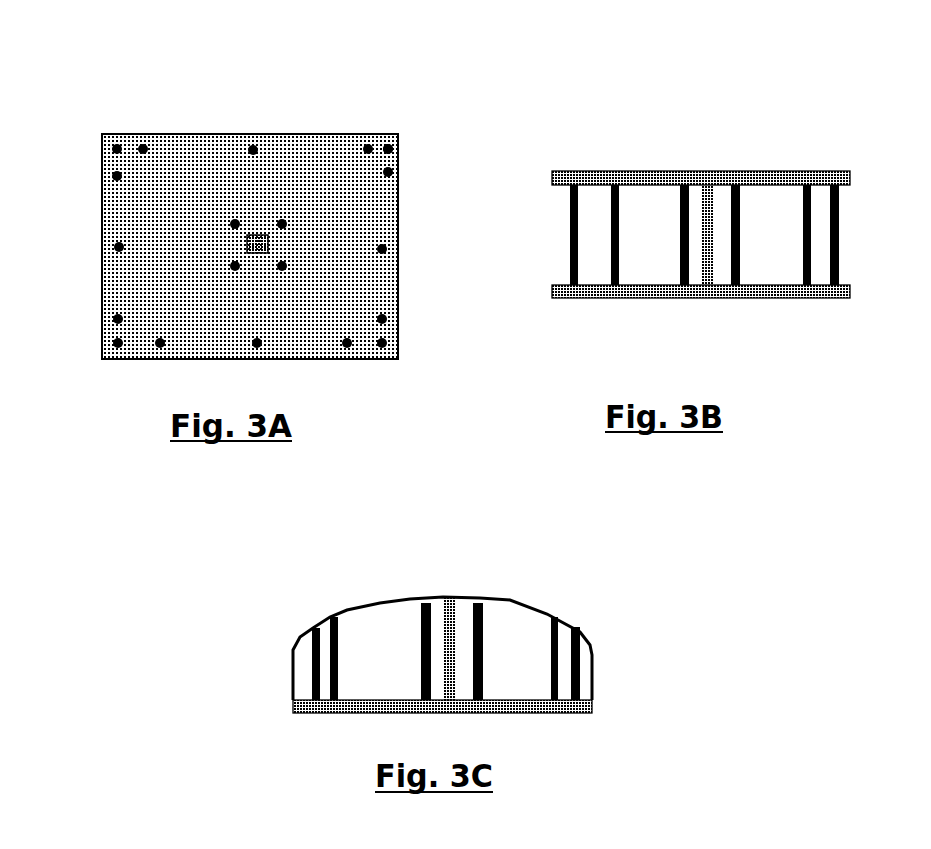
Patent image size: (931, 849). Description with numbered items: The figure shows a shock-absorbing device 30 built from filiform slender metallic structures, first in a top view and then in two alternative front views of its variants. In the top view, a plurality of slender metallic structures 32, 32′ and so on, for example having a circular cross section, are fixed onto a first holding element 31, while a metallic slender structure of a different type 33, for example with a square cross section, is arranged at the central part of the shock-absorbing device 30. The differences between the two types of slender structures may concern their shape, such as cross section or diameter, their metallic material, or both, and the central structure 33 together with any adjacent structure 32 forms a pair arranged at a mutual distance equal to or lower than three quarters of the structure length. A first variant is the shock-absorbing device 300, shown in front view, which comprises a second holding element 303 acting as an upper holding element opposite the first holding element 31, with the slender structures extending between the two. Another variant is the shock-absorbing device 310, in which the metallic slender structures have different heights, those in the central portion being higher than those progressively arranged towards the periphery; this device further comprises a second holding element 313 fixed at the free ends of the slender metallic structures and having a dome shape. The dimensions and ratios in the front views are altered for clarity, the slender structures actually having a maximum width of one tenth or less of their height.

In FIG. 3A, the shock-absorbing device 30 is at (282, 125).
In FIG. 3A, the first holding element 31 is at (387, 282).
In FIG. 3A, the slender metallic structure 32 is at (283, 224).
In FIG. 3A, the slender metallic structure 32′ is at (283, 266).
In FIG. 3A, the metallic slender structure of a different type 33 is at (250, 234).
In FIG. 3B, the shock-absorbing device 300 is at (663, 147).
In FIG. 3B, the second holding element 303 is at (601, 182).
In FIG. 3C, the shock-absorbing device 310 is at (622, 607).
In FIG. 3C, the second holding element 313 is at (357, 607).